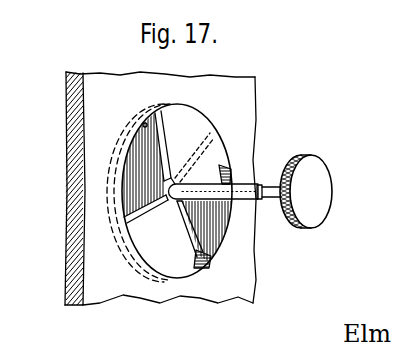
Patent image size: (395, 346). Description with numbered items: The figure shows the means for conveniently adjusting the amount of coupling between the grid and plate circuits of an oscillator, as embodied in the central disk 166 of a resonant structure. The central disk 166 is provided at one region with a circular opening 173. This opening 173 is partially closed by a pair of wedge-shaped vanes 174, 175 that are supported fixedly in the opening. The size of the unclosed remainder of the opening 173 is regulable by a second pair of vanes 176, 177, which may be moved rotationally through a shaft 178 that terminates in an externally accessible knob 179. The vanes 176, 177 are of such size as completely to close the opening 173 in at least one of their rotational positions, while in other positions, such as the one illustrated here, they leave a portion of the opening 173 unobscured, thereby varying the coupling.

The central disk 166 is at (90, 72).
The circular opening 173 is at (143, 125).
The wedge-shaped vane 174 is at (132, 182).
The wedge-shaped vane 175 is at (220, 170).
The vane 176 is at (193, 122).
The vane 177 is at (165, 262).
The shaft 178 is at (243, 199).
The knob 179 is at (328, 187).